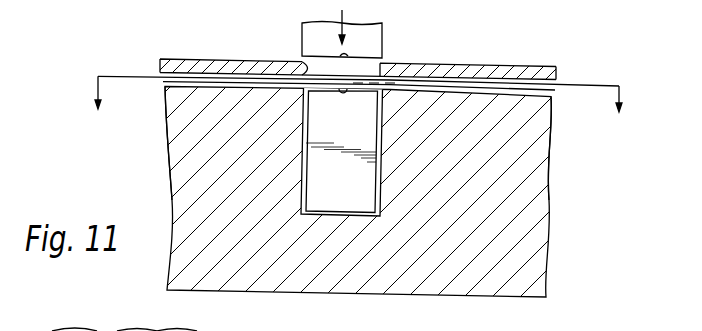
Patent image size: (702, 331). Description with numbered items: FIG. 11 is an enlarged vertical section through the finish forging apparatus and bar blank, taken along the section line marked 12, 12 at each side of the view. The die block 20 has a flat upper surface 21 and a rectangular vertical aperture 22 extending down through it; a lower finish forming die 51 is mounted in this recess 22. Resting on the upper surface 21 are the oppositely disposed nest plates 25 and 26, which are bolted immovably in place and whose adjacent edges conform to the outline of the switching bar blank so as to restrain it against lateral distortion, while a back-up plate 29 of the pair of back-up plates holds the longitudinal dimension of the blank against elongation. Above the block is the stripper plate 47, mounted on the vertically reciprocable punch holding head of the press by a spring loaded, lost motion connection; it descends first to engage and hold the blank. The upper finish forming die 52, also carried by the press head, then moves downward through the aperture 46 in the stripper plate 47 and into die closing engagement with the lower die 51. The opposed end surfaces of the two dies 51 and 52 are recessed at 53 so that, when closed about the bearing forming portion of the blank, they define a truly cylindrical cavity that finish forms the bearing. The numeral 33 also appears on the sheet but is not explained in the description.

The die block 20 is at (548, 253).
The flat upper surface 21 is at (614, 0).
The vertical aperture 22 is at (303, 198).
The nest plate 25 is at (163, 88).
The nest plate 26 is at (557, 97).
The back-up plate 29 is at (567, 8).
The member 33 is at (499, 7).
The aperture 46 is at (312, 62).
The stripper plate 47 is at (526, 65).
The lower finish forming die 51 is at (357, 208).
The upper finish forming die 52 is at (383, 33).
The recess 53 is at (344, 54).
The section line 12 is at (357, 114).